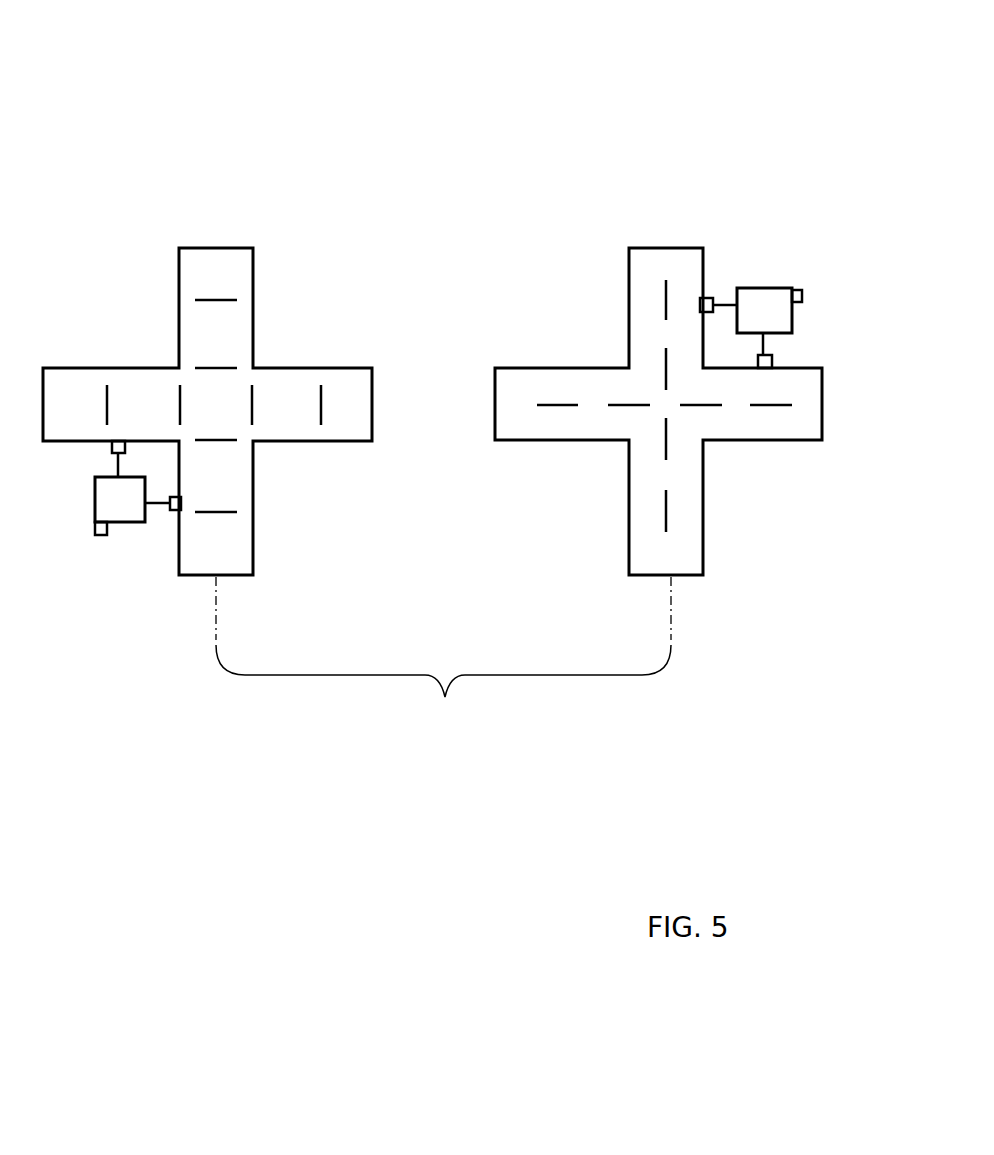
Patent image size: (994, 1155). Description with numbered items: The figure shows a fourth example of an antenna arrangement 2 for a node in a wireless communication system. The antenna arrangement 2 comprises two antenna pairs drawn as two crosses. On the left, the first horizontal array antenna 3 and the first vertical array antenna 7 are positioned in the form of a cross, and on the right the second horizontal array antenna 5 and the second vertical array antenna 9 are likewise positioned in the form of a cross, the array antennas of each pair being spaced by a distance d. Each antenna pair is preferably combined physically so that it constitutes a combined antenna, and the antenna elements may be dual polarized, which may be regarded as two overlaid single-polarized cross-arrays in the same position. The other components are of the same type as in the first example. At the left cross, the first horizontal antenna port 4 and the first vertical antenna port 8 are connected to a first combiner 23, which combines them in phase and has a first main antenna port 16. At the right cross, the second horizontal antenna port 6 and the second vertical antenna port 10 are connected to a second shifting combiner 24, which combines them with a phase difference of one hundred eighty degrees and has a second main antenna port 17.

The antenna arrangement 2 is at (224, 71).
The first horizontal array antenna 3 is at (133, 387).
The second horizontal array antenna 5 is at (570, 441).
The first vertical array antenna 7 is at (235, 558).
The second vertical array antenna 9 is at (672, 265).
The first vertical antenna port 8 is at (112, 445).
The first combiner 23 is at (107, 495).
The first horizontal antenna port 4 is at (170, 508).
The first main antenna port 16 is at (98, 535).
The second horizontal antenna port 6 is at (707, 298).
The second shifting combiner 24 is at (763, 310).
The second main antenna port 17 is at (800, 296).
The second vertical antenna port 10 is at (772, 358).
The distance d is at (443, 691).